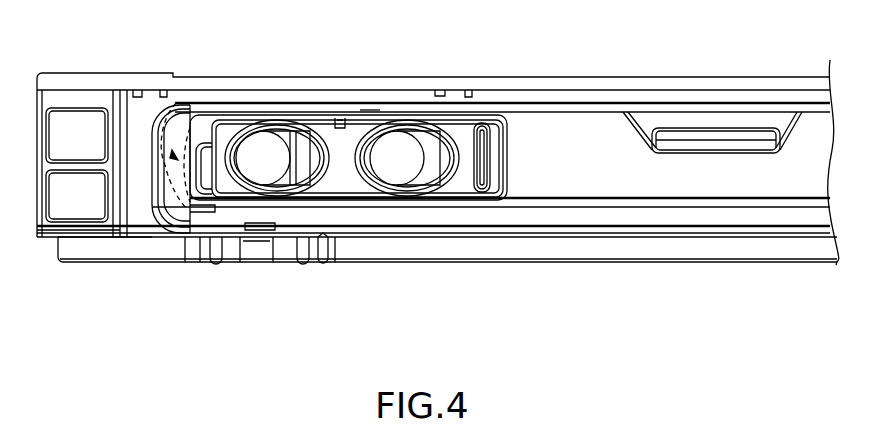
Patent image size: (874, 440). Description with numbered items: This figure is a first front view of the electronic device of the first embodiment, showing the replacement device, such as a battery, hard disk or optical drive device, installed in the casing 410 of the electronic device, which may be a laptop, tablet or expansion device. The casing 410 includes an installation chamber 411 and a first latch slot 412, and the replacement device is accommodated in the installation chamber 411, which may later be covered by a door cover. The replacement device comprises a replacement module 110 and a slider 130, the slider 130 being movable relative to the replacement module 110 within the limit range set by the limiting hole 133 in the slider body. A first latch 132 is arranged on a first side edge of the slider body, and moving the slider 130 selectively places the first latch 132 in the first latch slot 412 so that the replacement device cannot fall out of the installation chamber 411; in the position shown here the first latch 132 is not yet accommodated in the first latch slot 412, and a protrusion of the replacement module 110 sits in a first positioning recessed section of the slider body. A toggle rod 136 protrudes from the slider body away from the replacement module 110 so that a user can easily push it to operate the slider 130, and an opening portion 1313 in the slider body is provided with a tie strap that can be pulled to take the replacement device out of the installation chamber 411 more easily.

The replacement module 110 is at (573, 135).
The slider 130 is at (487, 123).
The first latch 132 is at (205, 172).
The limiting hole 133 is at (432, 172).
The toggle rod 136 is at (493, 135).
The opening portion 1313 is at (490, 160).
The casing 410 is at (237, 77).
The installation chamber 411 is at (207, 228).
The first latch slot 412 is at (165, 105).